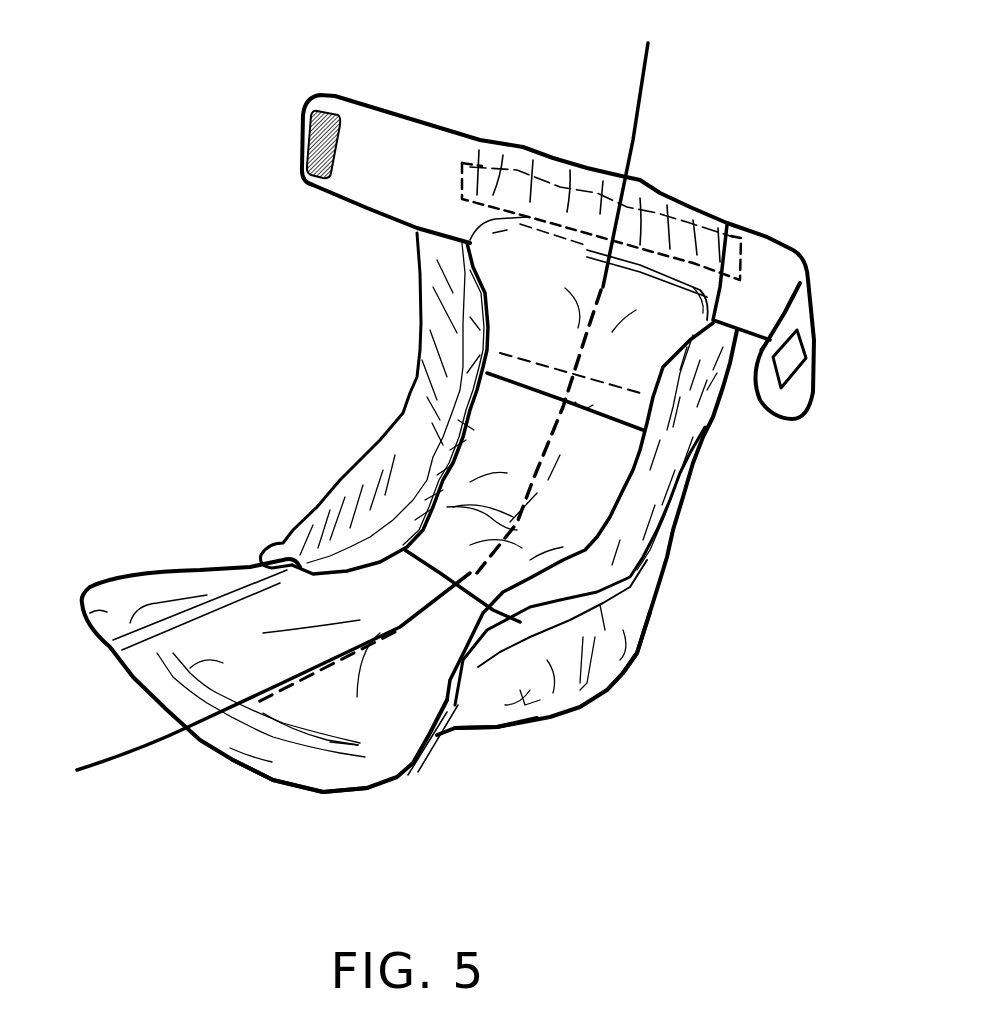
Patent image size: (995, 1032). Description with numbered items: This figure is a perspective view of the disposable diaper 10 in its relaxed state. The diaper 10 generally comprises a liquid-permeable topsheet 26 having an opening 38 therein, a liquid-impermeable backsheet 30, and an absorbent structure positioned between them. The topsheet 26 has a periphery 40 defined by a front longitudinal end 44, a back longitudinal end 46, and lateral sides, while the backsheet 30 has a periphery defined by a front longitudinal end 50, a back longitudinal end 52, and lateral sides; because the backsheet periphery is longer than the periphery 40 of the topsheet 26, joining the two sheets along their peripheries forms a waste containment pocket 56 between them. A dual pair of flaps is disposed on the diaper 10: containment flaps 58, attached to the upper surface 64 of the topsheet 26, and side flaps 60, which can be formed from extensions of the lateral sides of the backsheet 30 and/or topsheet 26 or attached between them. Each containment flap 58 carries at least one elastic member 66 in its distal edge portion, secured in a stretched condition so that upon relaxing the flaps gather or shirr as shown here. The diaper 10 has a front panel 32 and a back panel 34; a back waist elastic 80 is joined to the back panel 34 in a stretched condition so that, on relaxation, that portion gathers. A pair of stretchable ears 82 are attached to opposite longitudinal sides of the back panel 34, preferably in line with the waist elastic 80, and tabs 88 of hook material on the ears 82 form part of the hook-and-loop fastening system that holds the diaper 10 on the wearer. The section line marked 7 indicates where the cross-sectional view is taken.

The diaper 10 is at (244, 266).
The topsheet 26 is at (152, 696).
The backsheet 30 is at (486, 733).
The front panel 32 is at (183, 538).
The back panel 34 is at (752, 440).
The opening 38 is at (604, 398).
The periphery 40 is at (92, 613).
The front longitudinal end 44 is at (230, 748).
The back longitudinal end 46 is at (587, 166).
The front longitudinal end 50 is at (281, 788).
The back longitudinal end 52 is at (640, 180).
The waste containment pocket 56 is at (672, 687).
The containment flaps 58 is at (378, 577).
The side flaps 60 is at (378, 437).
The upper surface 64 is at (373, 717).
The elastic member 66 is at (484, 428).
The section line 7- 7 is at (690, 84).
The back waist elastic 80 is at (692, 206).
The stretchable ears 82 is at (421, 66).
The tabs 88 is at (313, 113).